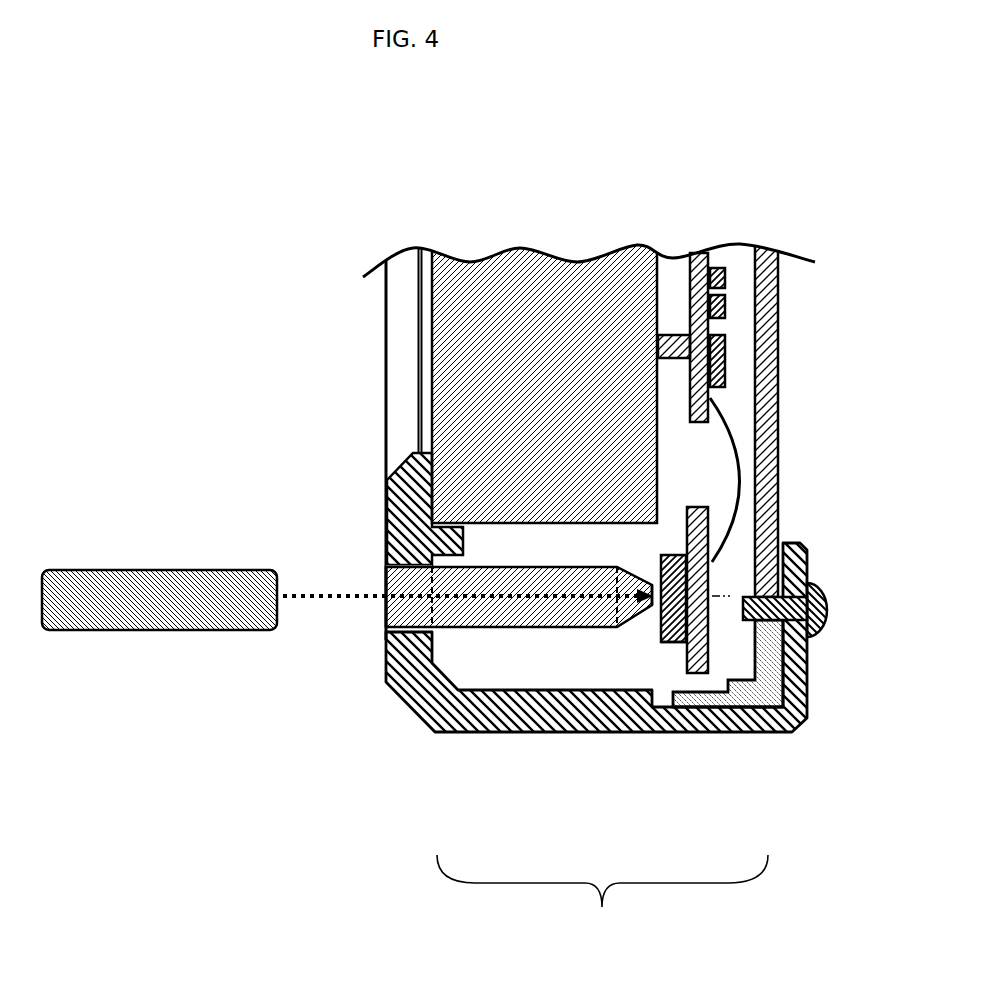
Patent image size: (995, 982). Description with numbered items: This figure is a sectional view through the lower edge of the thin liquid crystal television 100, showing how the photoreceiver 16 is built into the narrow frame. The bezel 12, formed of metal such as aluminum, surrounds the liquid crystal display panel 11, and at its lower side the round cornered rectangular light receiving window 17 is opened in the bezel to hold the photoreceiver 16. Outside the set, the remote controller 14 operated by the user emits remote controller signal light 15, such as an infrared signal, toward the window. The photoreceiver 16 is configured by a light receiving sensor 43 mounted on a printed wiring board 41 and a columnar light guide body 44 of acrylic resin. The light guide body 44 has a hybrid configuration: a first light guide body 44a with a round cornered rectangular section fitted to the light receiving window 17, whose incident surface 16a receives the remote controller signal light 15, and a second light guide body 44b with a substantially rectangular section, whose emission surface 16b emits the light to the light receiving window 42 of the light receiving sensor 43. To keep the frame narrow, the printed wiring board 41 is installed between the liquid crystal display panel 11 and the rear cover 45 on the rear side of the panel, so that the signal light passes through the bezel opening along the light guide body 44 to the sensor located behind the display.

The thin liquid crystal television 100 is at (782, 233).
The liquid crystal display panel 11 is at (530, 285).
The bezel 12 is at (402, 498).
The remote controller 14 is at (107, 582).
The remote controller signal light 15 is at (333, 597).
The photoreceiver 16 is at (577, 724).
The incident surface 16a is at (383, 588).
The emission surface 16b is at (653, 594).
The light receiving window 17 is at (384, 558).
The printed wiring board 41 is at (708, 665).
The light receiving window 42 is at (660, 598).
The light receiving sensor 43 is at (667, 643).
The light guide body 44 is at (492, 630).
The first light guide body 44a is at (418, 612).
The second light guide body 44b is at (588, 612).
The rear cover 45 is at (765, 360).